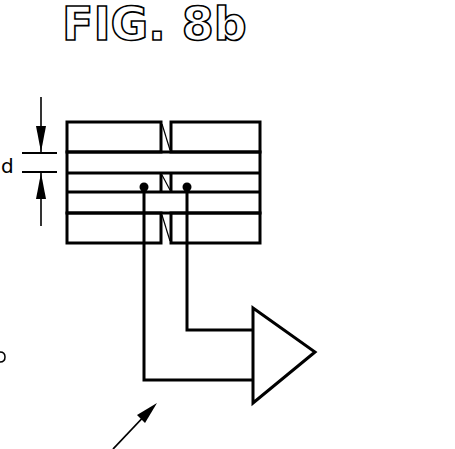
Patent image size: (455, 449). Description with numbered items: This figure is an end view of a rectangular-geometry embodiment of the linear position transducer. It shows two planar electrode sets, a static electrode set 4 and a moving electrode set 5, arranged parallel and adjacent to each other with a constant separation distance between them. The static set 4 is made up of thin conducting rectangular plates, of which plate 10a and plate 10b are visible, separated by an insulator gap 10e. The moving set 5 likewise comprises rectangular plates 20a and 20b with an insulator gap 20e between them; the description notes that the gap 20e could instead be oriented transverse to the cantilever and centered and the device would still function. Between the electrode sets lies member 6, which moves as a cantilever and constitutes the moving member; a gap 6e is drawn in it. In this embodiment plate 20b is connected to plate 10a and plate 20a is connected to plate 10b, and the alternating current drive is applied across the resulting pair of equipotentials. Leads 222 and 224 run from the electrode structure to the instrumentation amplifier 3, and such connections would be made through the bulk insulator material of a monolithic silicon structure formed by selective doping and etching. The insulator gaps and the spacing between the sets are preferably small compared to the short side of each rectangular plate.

The static electrode set 4 is at (180, 111).
The moving electrode set 5 is at (172, 265).
The member 6 is at (190, 182).
The gap in dielectric layer 6e is at (167, 174).
The rectangular element 10a is at (114, 125).
The rectangular element 10b is at (215, 125).
The insulator gap 10e is at (163, 121).
The rectangular element 20a is at (114, 241).
The rectangular element 20b is at (215, 241).
The insulator gap 20e is at (168, 246).
The first lead wire 222 is at (145, 345).
The second lead wire 224 is at (189, 297).
The instrumentation amplifier 3 is at (284, 355).